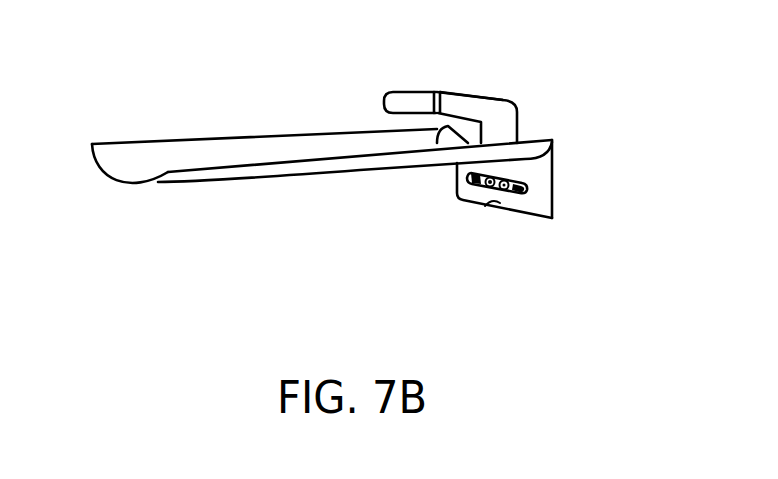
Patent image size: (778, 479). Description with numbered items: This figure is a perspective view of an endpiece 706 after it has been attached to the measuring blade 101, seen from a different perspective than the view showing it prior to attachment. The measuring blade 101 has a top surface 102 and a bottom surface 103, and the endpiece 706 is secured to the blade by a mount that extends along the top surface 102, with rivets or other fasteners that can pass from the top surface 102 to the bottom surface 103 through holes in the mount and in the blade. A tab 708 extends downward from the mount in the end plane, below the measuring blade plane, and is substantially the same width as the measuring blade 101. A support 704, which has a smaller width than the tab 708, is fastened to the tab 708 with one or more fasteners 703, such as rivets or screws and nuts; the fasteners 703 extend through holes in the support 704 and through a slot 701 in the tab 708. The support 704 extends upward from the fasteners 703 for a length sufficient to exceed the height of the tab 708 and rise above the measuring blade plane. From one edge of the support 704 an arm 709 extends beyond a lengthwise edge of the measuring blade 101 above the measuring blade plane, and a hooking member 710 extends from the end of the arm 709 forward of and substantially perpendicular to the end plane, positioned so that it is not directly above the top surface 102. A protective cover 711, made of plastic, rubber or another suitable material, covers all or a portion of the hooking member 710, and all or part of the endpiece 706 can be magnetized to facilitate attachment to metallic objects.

The measuring blade 101 is at (93, 168).
The top surface 102 is at (189, 143).
The bottom surface 103 is at (230, 182).
The slot 701 is at (527, 194).
The fasteners 703 is at (490, 190).
The support 704 is at (508, 124).
The endpiece 706 is at (568, 153).
The tab 708 is at (545, 204).
The arm 709 is at (467, 102).
The hooking member 710 is at (438, 93).
The protective cover 711 is at (408, 97).